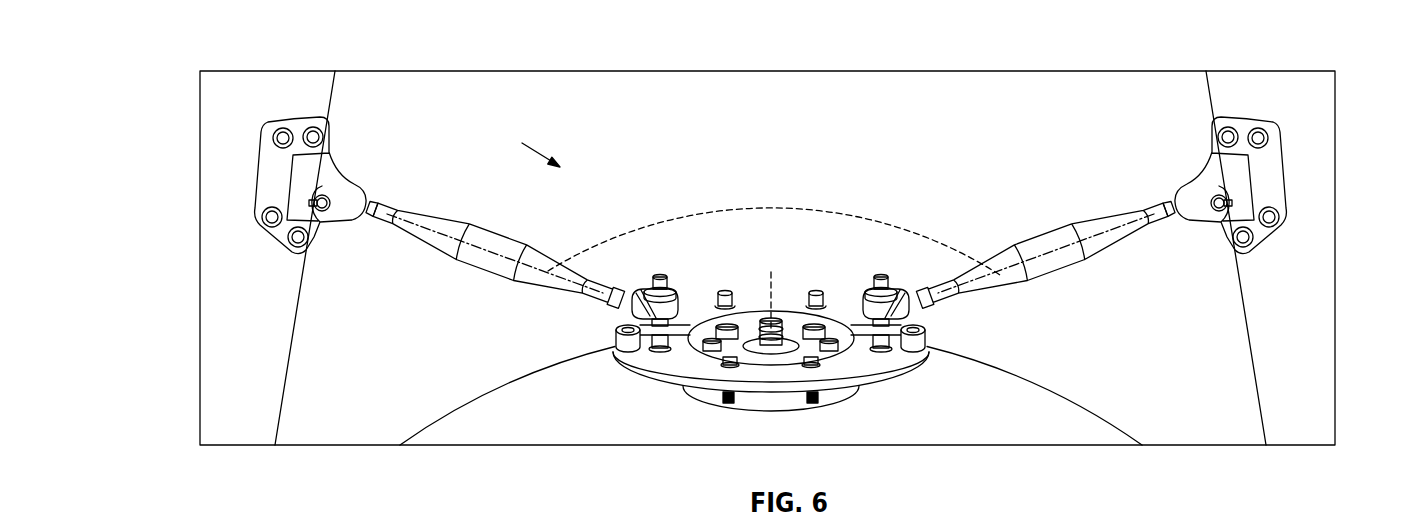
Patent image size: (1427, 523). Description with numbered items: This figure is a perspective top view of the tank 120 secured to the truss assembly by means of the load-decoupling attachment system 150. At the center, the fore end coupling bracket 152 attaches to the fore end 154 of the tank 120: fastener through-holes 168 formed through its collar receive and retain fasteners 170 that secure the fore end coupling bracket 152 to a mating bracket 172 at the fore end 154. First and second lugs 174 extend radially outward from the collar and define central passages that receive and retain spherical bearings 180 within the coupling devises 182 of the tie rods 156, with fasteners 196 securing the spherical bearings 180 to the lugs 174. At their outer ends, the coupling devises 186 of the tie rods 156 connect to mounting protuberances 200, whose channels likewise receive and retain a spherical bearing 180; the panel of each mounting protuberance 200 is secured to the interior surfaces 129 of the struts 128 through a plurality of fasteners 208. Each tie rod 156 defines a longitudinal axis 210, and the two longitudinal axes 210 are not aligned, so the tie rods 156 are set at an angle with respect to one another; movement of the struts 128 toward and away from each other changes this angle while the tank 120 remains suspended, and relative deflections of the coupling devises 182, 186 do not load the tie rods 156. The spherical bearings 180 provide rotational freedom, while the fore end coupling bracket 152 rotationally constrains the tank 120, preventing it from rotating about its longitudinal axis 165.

The tank 120 is at (1001, 412).
The struts 128 is at (316, 70).
The interior surfaces 129 is at (277, 353).
The load-decoupling attachment system 150 is at (520, 145).
The fore end coupling bracket 152 is at (660, 367).
The fore end 154 is at (947, 373).
The tie rods 156 is at (490, 223).
The longitudinal axis 165 is at (772, 272).
The fastener through-holes 168 is at (248, 88).
The fasteners 170 is at (726, 290).
The mating bracket 172 is at (707, 393).
The lugs 174 is at (637, 312).
The spherical bearings 180 is at (318, 217).
The coupling devises 182 is at (652, 288).
The coupling devises 186 is at (363, 190).
The fasteners 196 is at (661, 273).
The mounting protuberances 200 is at (327, 163).
The fasteners 208 is at (318, 134).
The longitudinal axis 210 is at (482, 248).